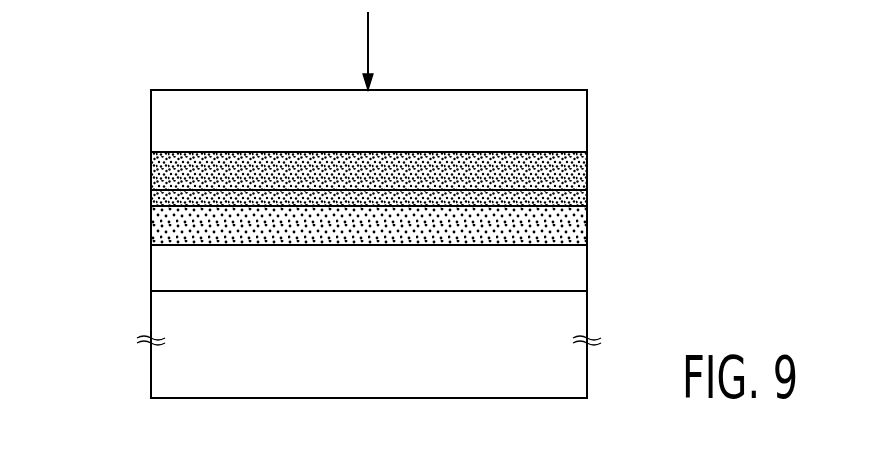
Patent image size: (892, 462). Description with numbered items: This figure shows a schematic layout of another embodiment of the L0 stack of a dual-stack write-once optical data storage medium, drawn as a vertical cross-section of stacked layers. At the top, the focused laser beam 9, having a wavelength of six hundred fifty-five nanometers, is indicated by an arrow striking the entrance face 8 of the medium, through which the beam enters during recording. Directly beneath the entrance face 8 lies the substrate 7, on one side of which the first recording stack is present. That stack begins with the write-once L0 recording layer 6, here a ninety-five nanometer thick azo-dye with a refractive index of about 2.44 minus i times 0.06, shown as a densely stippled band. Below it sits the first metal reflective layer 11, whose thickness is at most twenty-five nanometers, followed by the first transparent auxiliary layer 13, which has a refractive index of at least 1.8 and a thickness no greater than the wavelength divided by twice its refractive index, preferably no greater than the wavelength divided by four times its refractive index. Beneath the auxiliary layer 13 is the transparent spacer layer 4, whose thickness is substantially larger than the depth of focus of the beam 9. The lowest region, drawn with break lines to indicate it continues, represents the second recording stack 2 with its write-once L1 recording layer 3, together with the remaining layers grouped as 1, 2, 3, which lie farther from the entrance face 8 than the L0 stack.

The substrate 1 is at (177, 317).
The second recording stack 2 is at (369, 344).
The L1 recording layer 3 is at (369, 344).
The transparent spacer layer 4 is at (177, 271).
The L0 recording layer 6 is at (177, 170).
The substrate 7 is at (177, 127).
The entrance face 8 is at (218, 90).
The focused laser beam 9 is at (368, 40).
The first metal reflective layer 11 is at (177, 199).
The first transparent auxiliary layer 13 is at (177, 224).